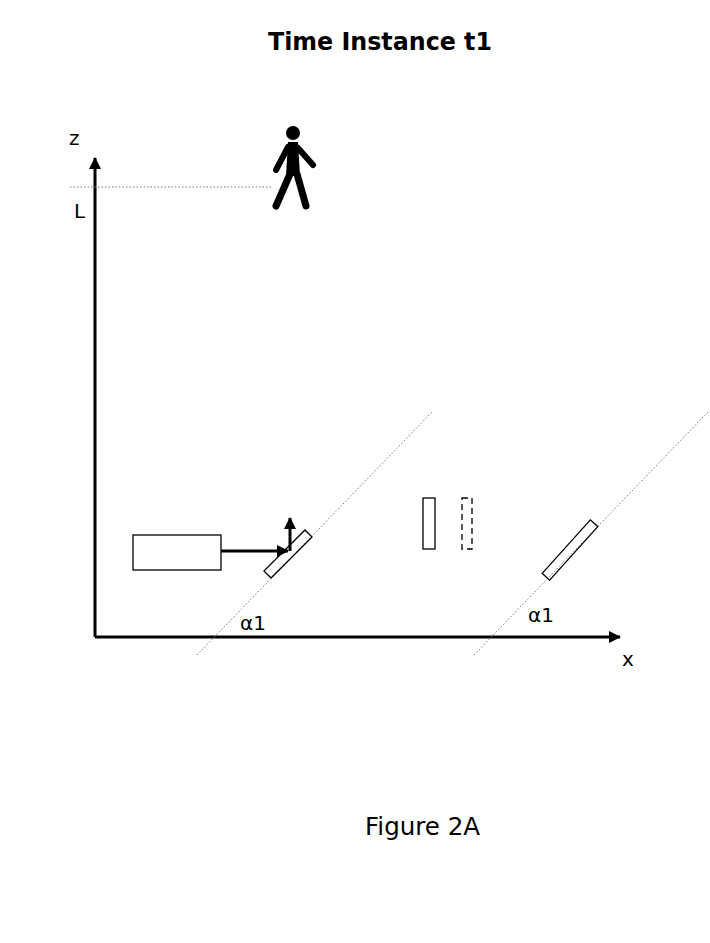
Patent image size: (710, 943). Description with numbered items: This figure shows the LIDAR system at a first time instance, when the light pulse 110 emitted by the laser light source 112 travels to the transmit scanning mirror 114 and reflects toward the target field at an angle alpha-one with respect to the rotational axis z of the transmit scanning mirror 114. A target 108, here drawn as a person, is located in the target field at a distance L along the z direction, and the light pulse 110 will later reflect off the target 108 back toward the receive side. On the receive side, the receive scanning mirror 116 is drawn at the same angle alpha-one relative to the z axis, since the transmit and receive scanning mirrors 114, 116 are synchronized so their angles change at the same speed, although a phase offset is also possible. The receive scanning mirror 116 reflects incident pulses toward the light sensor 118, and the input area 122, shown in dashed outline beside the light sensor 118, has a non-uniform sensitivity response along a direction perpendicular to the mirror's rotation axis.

The target 108 is at (266, 146).
The light pulse 110 is at (276, 517).
The laser light source 112 is at (177, 552).
The transmit scanning mirror 114 is at (293, 566).
The receive scanning mirror 116 is at (590, 543).
The light sensor 118 is at (428, 550).
The input area 122 is at (468, 497).